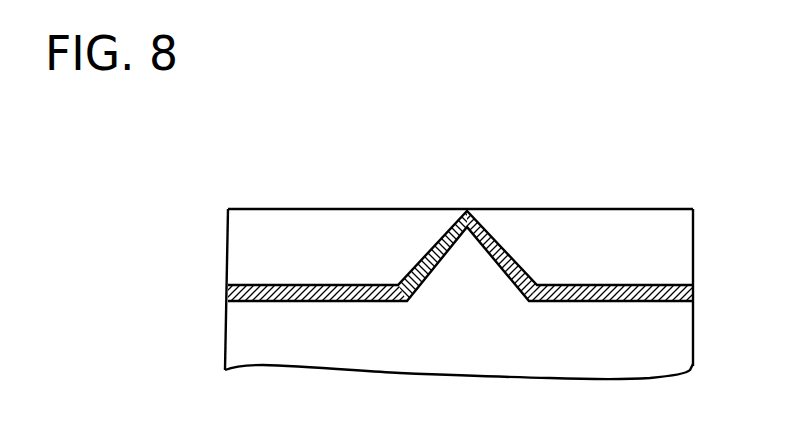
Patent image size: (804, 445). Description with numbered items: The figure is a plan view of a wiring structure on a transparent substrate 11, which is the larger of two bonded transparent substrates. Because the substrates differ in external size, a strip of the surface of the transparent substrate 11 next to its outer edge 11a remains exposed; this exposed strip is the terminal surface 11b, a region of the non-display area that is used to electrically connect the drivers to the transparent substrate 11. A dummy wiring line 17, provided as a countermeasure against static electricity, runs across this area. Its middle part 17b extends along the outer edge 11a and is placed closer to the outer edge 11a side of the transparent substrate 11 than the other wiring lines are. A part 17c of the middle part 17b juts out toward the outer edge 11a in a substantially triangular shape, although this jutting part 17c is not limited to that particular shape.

The transparent substrate 11 is at (228, 240).
The outer edge 11a is at (668, 208).
The terminal surface 11b is at (577, 226).
The dummy wiring line 17 is at (423, 214).
The middle part 17b is at (312, 290).
The part 17c is at (460, 210).